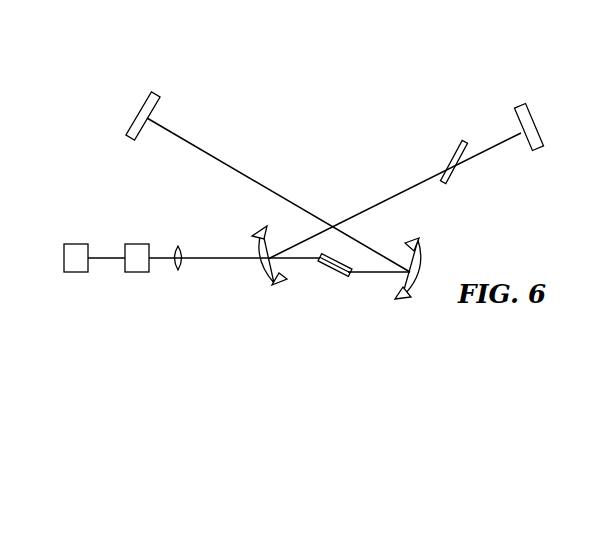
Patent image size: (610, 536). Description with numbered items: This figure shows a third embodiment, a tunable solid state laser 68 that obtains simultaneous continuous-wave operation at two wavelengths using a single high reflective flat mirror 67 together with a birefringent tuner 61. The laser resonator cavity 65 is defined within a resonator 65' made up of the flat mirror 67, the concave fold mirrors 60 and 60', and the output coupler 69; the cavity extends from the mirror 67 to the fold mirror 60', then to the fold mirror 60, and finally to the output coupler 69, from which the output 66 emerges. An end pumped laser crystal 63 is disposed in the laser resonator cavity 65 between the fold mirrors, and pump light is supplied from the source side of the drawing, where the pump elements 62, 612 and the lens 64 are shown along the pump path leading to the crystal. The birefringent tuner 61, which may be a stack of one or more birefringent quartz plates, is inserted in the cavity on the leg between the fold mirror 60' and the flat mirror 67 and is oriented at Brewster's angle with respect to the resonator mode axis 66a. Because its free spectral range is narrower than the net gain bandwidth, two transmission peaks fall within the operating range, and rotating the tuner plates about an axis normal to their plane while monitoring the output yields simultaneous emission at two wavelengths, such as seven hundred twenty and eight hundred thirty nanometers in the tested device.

The concave fold mirror 60 is at (415, 249).
The concave fold mirror 60' is at (256, 239).
The birefringent tuner 61 is at (450, 156).
The light source 62 is at (75, 272).
The modulator 612 is at (136, 272).
The end pumped laser crystal 63 is at (317, 262).
The lens 64 is at (178, 246).
The laser resonator cavity 65 is at (351, 155).
The resonator 65' is at (351, 56).
The output 66 is at (137, 110).
The resonator mode axis 66a is at (493, 147).
The high reflective flat mirror 67 is at (531, 110).
The tunable solid state laser 68 is at (272, 134).
The output coupler 69 is at (160, 103).